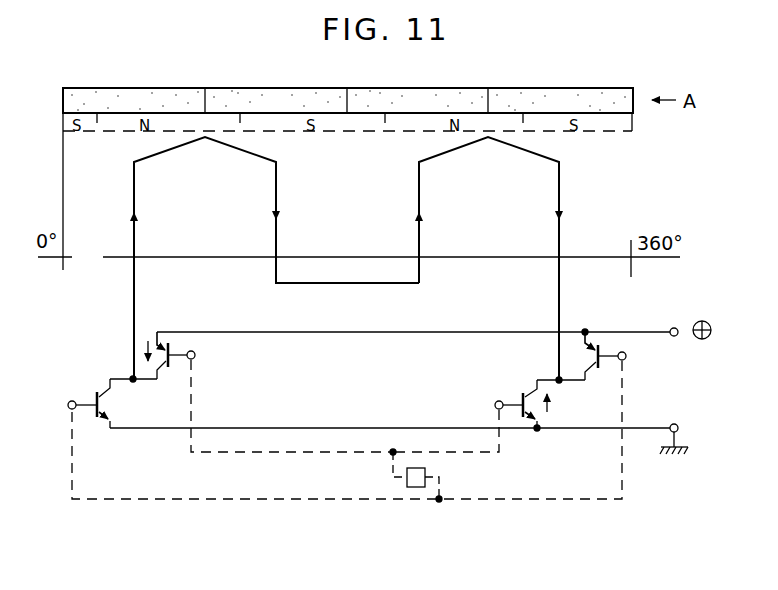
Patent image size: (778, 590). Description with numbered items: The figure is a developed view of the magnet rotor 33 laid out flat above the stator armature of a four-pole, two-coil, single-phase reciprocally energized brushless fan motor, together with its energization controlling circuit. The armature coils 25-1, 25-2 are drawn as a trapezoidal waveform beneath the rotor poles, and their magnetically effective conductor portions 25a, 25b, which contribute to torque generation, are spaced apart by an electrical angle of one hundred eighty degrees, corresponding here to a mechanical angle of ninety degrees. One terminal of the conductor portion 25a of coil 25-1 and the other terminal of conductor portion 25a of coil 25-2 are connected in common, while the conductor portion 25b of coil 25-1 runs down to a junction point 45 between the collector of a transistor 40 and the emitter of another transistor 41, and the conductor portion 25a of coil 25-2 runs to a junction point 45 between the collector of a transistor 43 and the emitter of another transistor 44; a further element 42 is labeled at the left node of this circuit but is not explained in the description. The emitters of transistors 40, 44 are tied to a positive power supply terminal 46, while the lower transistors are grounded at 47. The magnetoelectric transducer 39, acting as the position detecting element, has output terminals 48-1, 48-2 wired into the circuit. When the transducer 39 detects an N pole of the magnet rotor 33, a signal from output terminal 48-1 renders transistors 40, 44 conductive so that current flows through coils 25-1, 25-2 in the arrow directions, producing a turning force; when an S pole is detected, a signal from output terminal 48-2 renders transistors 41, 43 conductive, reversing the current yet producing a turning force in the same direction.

The magnet rotor 33 is at (598, 87).
The armature coil 25-1 is at (145, 154).
The armature coil 25-2 is at (418, 160).
The magnetically effective conductor portion 25a is at (278, 192).
The magnetically effective conductor portion 25b is at (136, 198).
The magnetoelectric transducer 39 is at (415, 488).
The transistor 40 is at (196, 351).
The transistor 41 is at (120, 408).
The transistor 42 is at (132, 378).
The transistor 43 is at (608, 343).
The transistor 44 is at (552, 408).
The junction point 45 is at (556, 378).
The positive power supply terminal 46 is at (676, 327).
The ground 47 is at (680, 432).
The output terminal 48-1 is at (392, 462).
The output terminal 48-2 is at (441, 486).